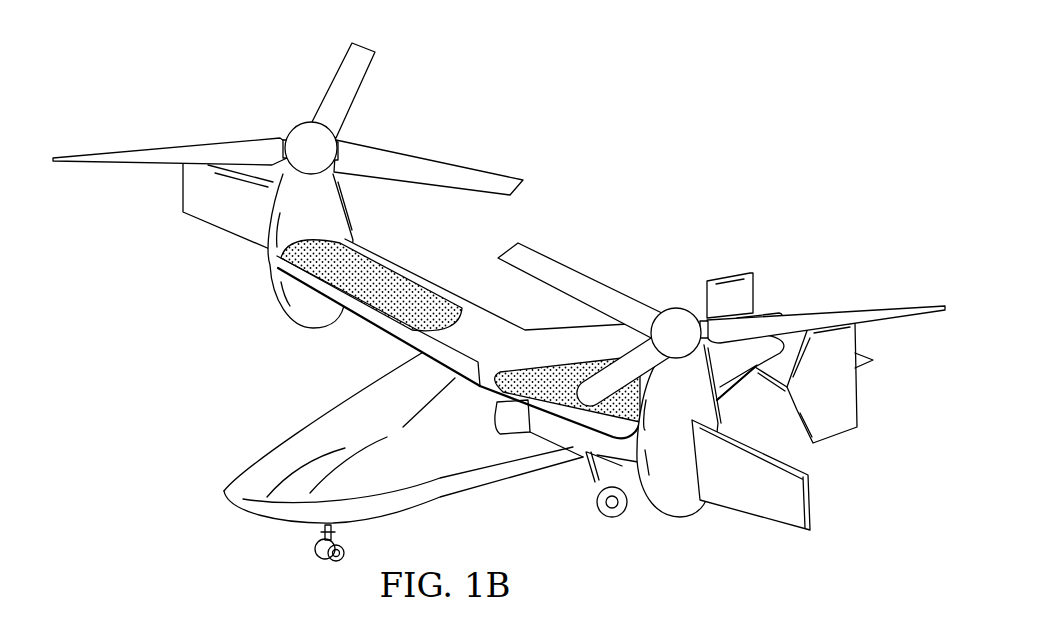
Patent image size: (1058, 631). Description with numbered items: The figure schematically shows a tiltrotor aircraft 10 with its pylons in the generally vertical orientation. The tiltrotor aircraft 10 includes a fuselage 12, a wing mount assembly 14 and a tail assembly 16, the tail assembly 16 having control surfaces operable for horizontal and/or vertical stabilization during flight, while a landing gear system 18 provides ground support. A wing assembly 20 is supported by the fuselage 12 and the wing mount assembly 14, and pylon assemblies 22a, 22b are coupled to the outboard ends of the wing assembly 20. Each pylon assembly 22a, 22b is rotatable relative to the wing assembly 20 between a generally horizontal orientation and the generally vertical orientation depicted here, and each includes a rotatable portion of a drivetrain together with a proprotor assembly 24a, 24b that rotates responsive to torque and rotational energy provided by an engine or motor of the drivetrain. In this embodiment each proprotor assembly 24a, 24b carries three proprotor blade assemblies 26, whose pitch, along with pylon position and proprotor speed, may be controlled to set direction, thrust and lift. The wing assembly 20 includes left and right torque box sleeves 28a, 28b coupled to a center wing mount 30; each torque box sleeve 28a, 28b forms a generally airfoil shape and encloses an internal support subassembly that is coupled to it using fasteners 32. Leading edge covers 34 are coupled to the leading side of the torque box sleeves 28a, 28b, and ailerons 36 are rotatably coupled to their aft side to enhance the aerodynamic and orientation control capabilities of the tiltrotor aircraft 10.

The tiltrotor aircraft 10 is at (641, 172).
The fuselage 12 is at (286, 523).
The wing mount assembly 14 is at (438, 362).
The tail assembly 16 is at (727, 277).
The landing gear system 18 is at (591, 508).
The wing assembly 20 is at (461, 296).
The pylon assembly 22a is at (688, 514).
The pylon assembly 22b is at (270, 278).
The proprotor assembly 24a is at (671, 308).
The proprotor assembly 24b is at (306, 123).
The proprotor blade assembly 26 is at (138, 150).
The torque box sleeve 28a is at (560, 363).
The torque box sleeve 28b is at (373, 268).
The center wing mount 30 is at (500, 337).
The fasteners 32 is at (385, 295).
The leading edge cover 34 is at (313, 292).
The aileron 36 is at (432, 287).